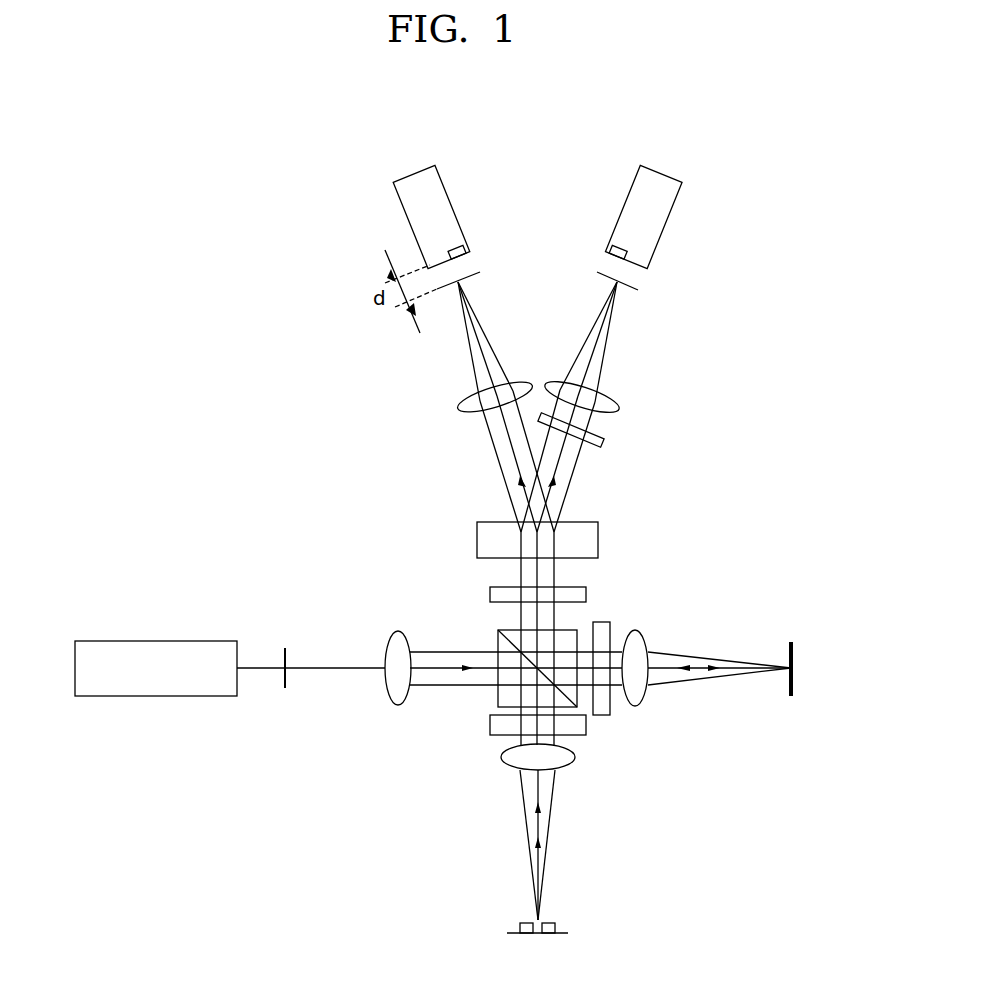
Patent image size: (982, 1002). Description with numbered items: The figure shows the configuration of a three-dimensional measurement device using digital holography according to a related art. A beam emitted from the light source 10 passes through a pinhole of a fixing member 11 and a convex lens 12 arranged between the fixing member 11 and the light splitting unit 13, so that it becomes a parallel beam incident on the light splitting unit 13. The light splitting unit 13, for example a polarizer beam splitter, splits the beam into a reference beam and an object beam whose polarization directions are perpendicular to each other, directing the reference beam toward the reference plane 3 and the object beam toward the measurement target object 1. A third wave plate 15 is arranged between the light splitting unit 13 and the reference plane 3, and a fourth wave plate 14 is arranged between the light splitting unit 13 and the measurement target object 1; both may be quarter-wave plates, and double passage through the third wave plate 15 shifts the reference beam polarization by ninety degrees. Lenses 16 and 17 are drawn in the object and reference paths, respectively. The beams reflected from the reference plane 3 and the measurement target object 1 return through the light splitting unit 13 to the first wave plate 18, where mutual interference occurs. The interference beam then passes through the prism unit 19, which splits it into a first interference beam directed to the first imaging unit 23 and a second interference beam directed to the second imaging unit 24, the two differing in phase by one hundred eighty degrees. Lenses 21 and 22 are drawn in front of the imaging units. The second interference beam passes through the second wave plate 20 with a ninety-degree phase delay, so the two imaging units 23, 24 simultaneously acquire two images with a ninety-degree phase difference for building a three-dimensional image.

The measurement target object 1 is at (538, 933).
The reference plane 3 is at (791, 696).
The light source 10 is at (157, 697).
The fixing member 11 is at (285, 678).
The convex lens 12 is at (398, 705).
The light splitting unit 13 is at (498, 640).
The fourth wave plate 14 is at (490, 724).
The third wave plate 15 is at (603, 622).
The objective lens 16 is at (502, 757).
The lens 17 is at (633, 707).
The first wave plate 18 is at (490, 593).
The prism unit 19 is at (598, 540).
The second wave plate 20 is at (602, 438).
The lens 21 is at (458, 403).
The lens 22 is at (618, 407).
The first imaging unit 23 is at (415, 172).
The second imaging unit 24 is at (662, 172).